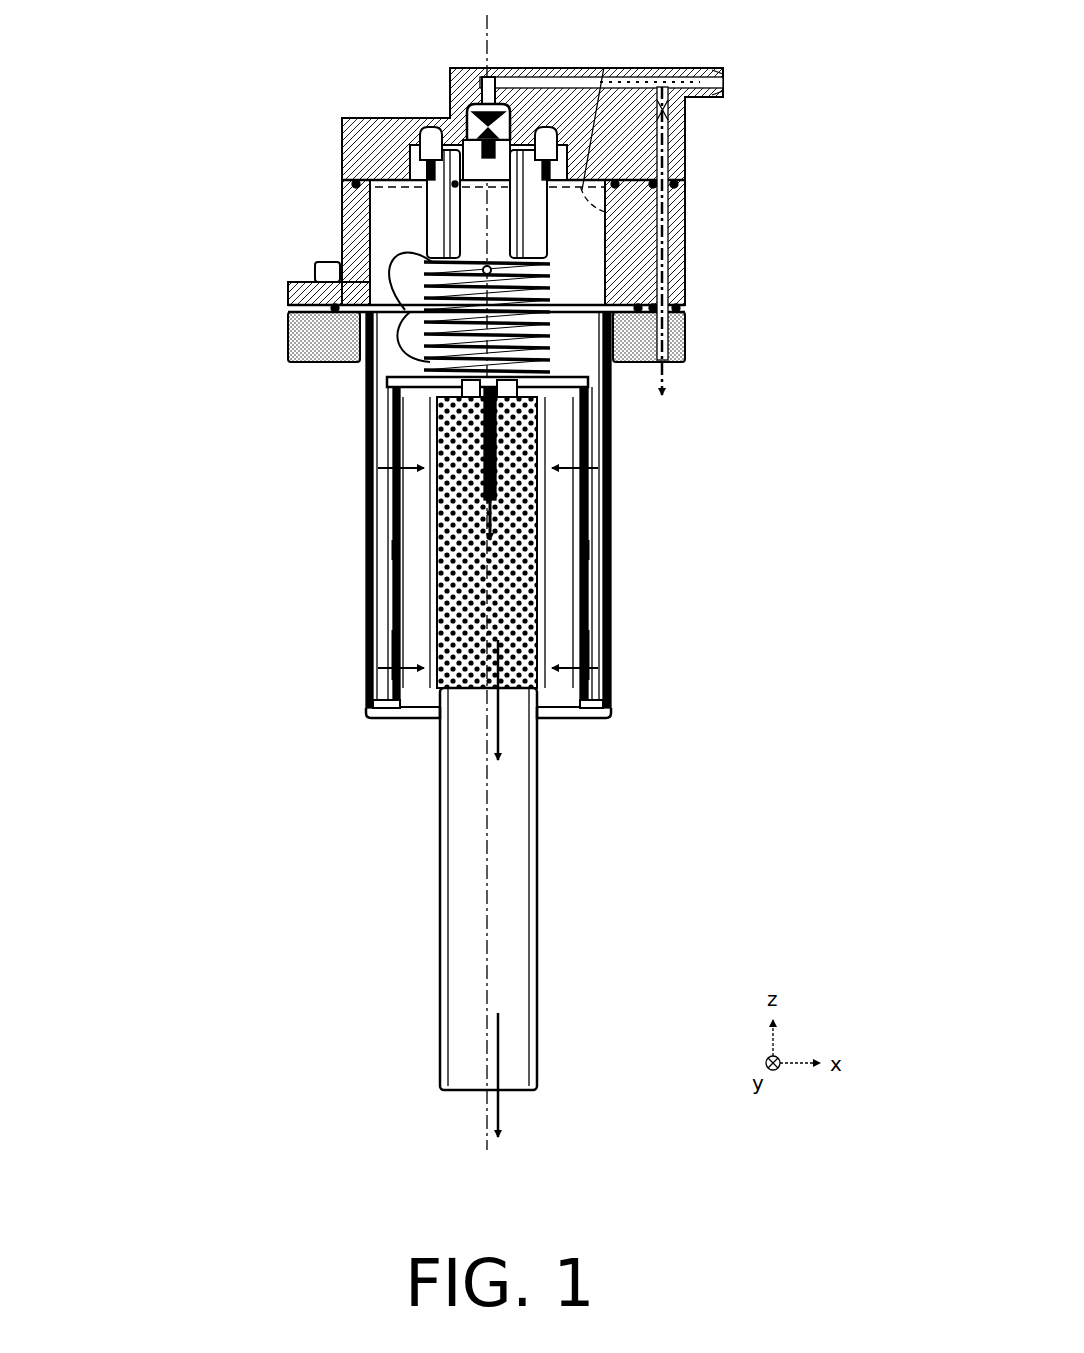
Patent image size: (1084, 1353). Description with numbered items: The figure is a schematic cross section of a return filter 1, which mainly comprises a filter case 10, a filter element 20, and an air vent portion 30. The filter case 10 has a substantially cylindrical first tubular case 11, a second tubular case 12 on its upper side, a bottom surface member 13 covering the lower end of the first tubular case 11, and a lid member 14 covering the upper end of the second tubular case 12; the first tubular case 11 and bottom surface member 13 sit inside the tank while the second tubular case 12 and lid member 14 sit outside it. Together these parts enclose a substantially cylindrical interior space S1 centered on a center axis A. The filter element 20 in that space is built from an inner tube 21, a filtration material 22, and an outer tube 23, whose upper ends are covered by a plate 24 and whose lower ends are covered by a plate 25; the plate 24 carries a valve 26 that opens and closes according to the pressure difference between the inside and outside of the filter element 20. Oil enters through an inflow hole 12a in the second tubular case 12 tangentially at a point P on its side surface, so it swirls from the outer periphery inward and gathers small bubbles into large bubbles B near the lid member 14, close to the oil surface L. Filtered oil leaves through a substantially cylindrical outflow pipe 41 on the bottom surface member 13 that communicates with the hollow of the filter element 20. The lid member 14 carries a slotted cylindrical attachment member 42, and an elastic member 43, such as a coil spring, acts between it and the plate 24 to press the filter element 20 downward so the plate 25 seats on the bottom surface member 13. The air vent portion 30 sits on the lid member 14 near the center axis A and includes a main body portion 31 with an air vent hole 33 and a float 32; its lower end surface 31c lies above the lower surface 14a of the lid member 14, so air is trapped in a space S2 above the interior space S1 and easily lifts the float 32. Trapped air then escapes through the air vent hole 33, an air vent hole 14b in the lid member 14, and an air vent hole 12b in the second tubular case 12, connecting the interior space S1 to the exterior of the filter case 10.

The return filter 1 is at (757, 20).
The filter case 10 is at (746, 462).
The first tubular case 11 is at (608, 542).
The second tubular case 12 is at (686, 271).
The inflow hole 12a is at (288, 300).
The air vent hole 12b is at (686, 300).
The bottom surface member 13 is at (603, 742).
The lid member 14 is at (686, 156).
The lower surface 14a is at (604, 67).
The air vent hole 14b is at (686, 121).
The filter element 20 is at (252, 592).
The inner tube 21 is at (423, 590).
The filtration material 22 is at (413, 633).
The outer tube 23 is at (425, 555).
The plate 24 is at (390, 395).
The plate 25 is at (380, 707).
The valve 26 is at (430, 492).
The air vent portion 30 is at (286, 31).
The main body portion 31 is at (456, 140).
The lower end surface 31c is at (462, 165).
The float 32 is at (452, 109).
The air vent hole 33 is at (452, 104).
The outflow pipe 41 is at (527, 830).
The attachment member 42 is at (455, 185).
The elastic member 43 is at (358, 318).
The center axis A is at (487, 848).
The bubbles B is at (432, 270).
The oil surface L is at (605, 212).
The point P is at (425, 245).
The interior space S1 is at (580, 352).
The space S2 is at (512, 142).